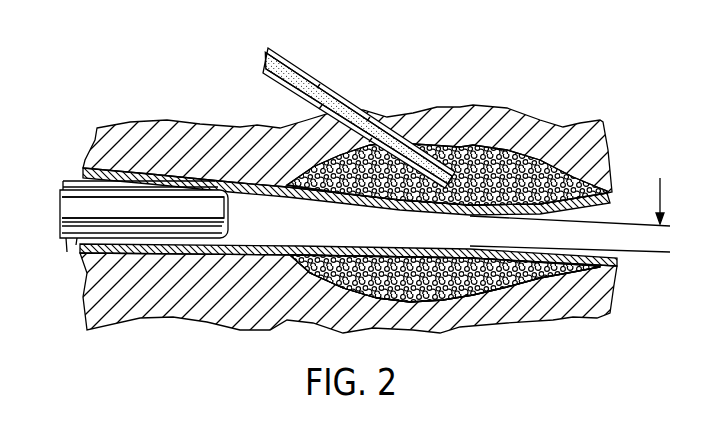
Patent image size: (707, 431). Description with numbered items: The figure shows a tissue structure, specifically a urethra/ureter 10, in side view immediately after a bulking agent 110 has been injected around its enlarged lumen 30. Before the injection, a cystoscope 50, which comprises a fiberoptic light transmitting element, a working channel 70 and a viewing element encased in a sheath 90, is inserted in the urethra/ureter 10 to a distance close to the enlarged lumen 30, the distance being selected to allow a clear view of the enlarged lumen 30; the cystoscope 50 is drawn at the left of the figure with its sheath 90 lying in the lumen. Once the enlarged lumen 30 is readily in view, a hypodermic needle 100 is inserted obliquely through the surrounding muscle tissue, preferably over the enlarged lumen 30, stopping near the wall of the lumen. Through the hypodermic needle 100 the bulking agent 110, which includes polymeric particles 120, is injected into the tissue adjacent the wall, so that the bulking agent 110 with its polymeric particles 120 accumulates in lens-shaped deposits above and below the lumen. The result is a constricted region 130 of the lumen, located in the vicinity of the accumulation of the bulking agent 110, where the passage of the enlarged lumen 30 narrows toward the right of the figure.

The urethra/ureter 10 is at (660, 255).
The enlarged lumen 30 is at (287, 230).
The cystoscope 50 is at (139, 178).
The working channel 70 is at (143, 209).
The sheath 90 is at (67, 252).
The hypodermic needle 100 is at (292, 63).
The bulking agent 110 is at (489, 150).
The polymeric particles 120 is at (453, 297).
The constricted region 130 is at (662, 190).